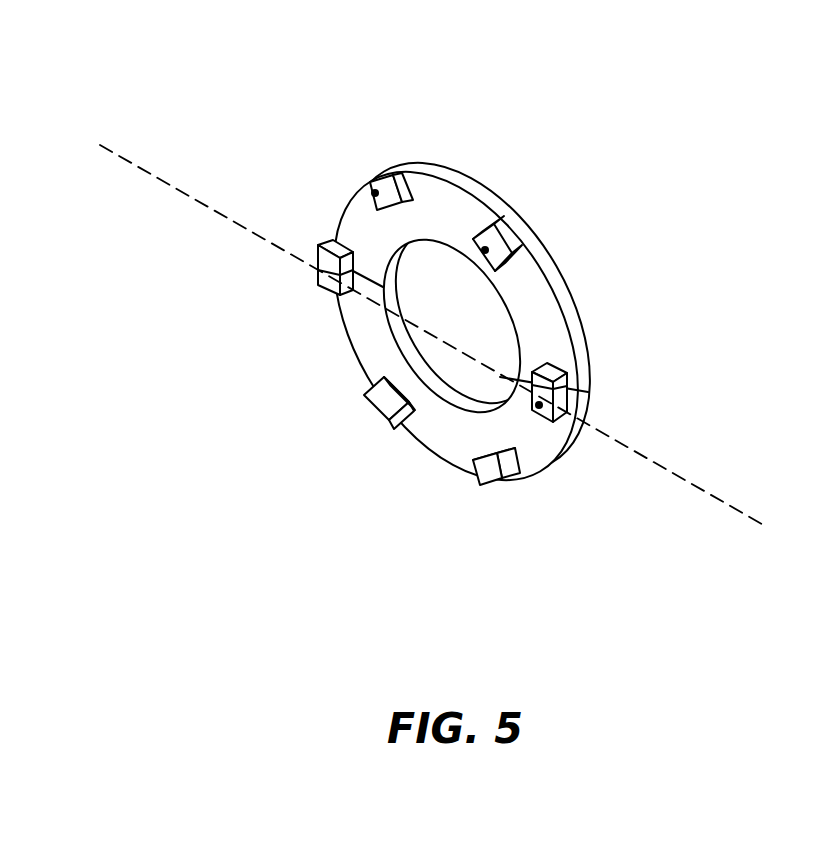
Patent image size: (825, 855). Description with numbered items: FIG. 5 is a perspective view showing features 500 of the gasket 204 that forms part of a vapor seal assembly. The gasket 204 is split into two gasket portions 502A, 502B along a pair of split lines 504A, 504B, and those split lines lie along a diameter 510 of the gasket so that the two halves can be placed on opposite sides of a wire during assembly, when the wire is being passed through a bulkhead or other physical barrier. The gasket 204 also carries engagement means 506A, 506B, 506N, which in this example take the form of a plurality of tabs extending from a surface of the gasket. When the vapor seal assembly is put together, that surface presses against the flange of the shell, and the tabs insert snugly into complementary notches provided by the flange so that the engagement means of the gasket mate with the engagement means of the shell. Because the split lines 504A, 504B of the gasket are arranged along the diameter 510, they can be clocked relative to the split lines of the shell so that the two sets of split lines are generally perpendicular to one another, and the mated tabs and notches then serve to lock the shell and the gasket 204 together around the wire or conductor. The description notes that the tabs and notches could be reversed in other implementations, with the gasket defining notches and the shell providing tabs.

The features of the gasket 500 is at (433, 274).
The gasket 204 is at (471, 318).
The gasket portion 502A is at (468, 314).
The gasket portion 502B is at (421, 326).
The split line 504A is at (619, 389).
The split line 504B is at (270, 274).
The engagement means 506A is at (327, 173).
The engagement means 506B is at (546, 229).
The engagement means 506N is at (600, 458).
The diameter 510 is at (158, 178).